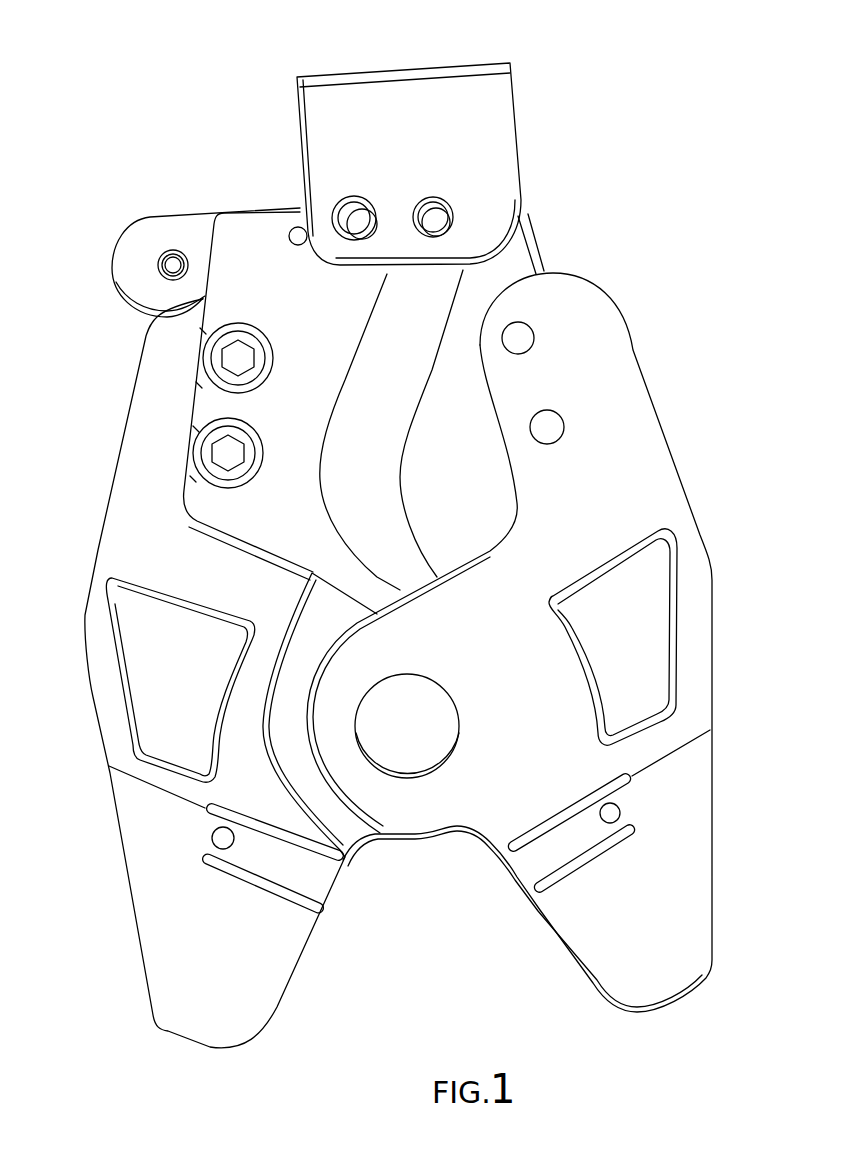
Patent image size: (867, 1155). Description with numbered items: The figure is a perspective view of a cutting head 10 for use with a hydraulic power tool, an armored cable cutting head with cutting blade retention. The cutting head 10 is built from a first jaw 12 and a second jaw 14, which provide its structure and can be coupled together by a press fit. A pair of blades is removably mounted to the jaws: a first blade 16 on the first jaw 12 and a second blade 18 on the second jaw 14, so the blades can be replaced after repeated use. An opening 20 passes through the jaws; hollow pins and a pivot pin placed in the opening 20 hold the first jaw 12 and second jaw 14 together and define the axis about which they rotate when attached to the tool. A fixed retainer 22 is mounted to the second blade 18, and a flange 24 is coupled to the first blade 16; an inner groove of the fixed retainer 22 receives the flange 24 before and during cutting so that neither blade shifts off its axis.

The cutting head 10 is at (612, 84).
The first jaw 12 is at (647, 434).
The second jaw 14 is at (112, 522).
The first blade 16 is at (505, 263).
The second blade 18 is at (267, 230).
The opening 20 is at (442, 687).
The fixed retainer 22 is at (455, 67).
The flange 24 is at (142, 243).